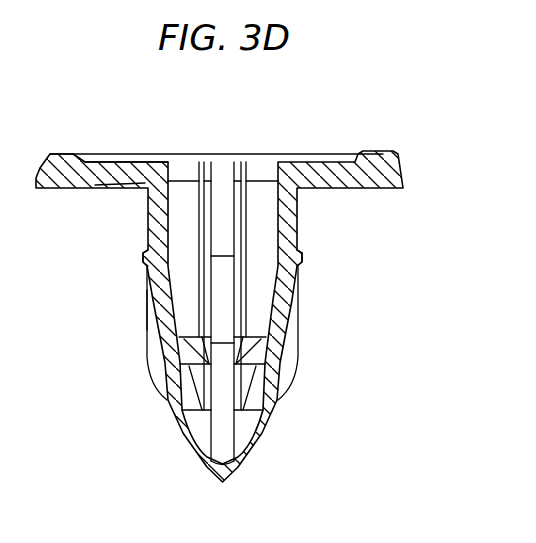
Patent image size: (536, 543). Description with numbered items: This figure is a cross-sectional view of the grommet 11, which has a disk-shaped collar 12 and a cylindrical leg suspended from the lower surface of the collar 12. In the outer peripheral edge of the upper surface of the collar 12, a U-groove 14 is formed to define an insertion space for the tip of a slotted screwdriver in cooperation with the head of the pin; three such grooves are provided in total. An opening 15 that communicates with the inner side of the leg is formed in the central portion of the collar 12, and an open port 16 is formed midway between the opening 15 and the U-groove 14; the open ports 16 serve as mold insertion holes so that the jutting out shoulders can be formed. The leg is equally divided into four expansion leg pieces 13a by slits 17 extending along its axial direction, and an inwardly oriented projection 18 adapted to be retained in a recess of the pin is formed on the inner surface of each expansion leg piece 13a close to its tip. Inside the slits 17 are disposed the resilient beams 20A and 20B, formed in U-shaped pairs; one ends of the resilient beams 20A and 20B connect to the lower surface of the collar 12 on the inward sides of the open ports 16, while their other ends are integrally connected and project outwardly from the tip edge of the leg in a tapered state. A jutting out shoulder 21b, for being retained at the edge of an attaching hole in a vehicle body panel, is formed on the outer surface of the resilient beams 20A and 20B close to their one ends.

The grommet 11 is at (365, 124).
The collar 12 is at (327, 158).
The expansion leg piece 13a is at (150, 340).
The U-groove 14 is at (87, 155).
The opening 15 is at (223, 165).
The open port 16 is at (136, 166).
The slit 17 is at (146, 302).
The inwardly oriented projection 18 is at (181, 364).
The resilient beam 20A is at (222, 436).
The resilient beam 20B is at (180, 412).
The jutting out shoulder 21b is at (143, 260).